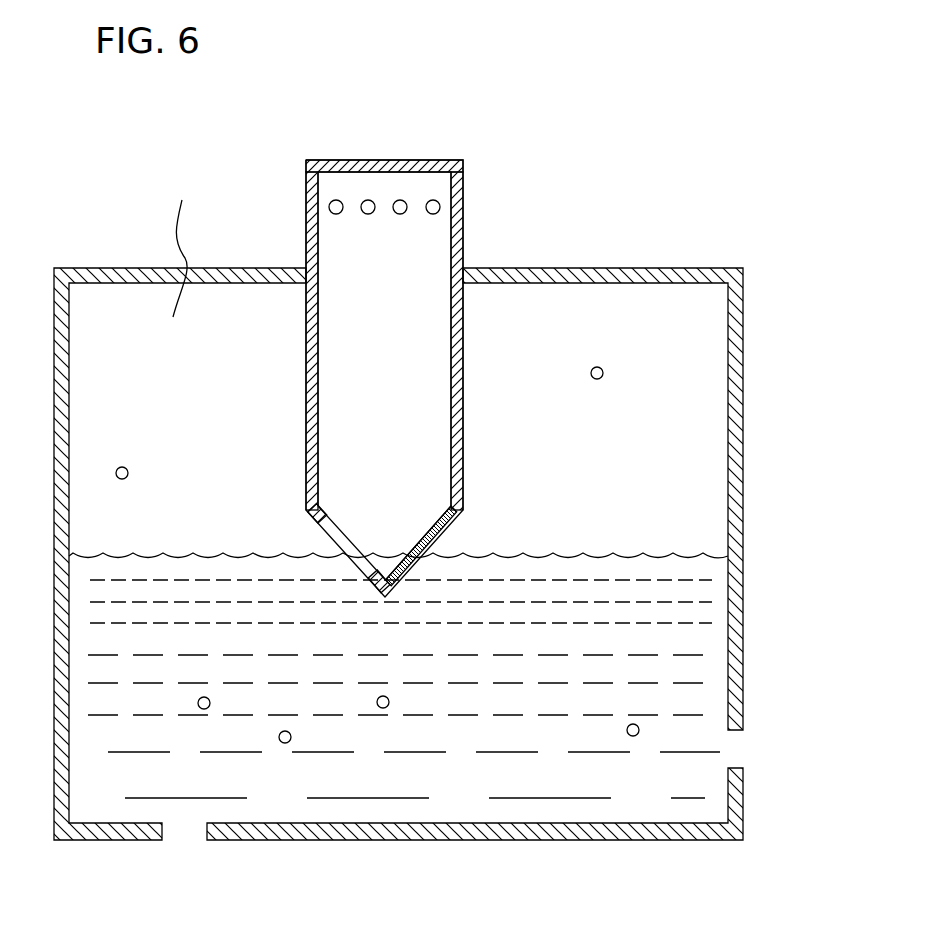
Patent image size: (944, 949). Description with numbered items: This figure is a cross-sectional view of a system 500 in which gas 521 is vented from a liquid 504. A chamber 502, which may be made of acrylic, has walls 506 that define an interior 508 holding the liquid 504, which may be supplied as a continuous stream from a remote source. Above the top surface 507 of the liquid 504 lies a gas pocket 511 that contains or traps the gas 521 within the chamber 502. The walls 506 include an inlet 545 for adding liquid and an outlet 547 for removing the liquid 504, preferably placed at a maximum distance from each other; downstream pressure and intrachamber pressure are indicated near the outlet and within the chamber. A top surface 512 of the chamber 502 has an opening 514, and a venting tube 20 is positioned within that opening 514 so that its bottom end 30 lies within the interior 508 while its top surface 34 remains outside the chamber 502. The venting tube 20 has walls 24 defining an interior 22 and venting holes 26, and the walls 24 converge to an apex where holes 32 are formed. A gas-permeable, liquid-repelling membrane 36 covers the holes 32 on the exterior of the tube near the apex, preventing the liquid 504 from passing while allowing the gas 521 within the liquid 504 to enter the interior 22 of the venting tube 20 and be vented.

The system 500 is at (118, 228).
The chamber 502 is at (50, 422).
The liquid 504 is at (118, 773).
The walls 506 is at (743, 572).
The top surface of the liquid 507 is at (208, 548).
The interior of the chamber 508 is at (708, 633).
The gas pocket 511 is at (138, 373).
The top surface of the chamber 512 is at (586, 268).
The opening 514 is at (307, 283).
The gas 521 is at (129, 473).
The inlet 545 is at (184, 832).
The outlet 547 is at (730, 750).
The venting tube 20 is at (470, 418).
The interior 22 is at (317, 383).
The walls 24 is at (306, 240).
The venting holes 26 is at (336, 214).
The bottom end 30 is at (403, 590).
The holes 32 is at (376, 556).
The top surface 34 is at (420, 160).
The membrane 36 is at (313, 529).